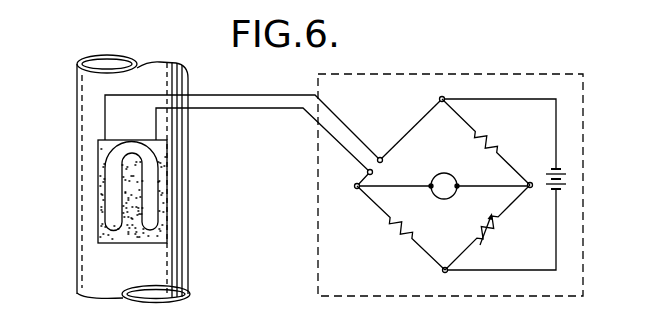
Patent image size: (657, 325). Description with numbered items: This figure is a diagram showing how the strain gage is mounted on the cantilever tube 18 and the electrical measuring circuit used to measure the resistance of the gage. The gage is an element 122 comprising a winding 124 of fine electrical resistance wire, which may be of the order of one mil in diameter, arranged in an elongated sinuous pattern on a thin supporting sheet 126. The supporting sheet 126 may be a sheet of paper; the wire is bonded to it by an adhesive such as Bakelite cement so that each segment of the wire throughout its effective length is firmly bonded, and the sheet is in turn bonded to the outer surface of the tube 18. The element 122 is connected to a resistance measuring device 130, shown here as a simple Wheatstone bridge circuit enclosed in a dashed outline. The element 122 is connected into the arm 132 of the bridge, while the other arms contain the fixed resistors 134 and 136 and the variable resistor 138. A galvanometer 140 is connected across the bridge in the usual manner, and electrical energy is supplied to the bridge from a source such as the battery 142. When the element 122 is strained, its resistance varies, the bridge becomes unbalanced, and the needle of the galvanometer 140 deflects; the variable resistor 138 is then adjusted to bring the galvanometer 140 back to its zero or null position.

The tube 18 is at (183, 267).
The element 122 is at (95, 170).
The winding 124 is at (152, 192).
The supporting sheet 126 is at (167, 227).
The resistance measuring device 130 is at (343, 236).
The arm 132 is at (414, 127).
The fixed resistor 134 is at (487, 141).
The fixed resistor 136 is at (398, 236).
The variable resistor 138 is at (489, 229).
The galvanometer 140 is at (441, 199).
The battery 142 is at (562, 184).